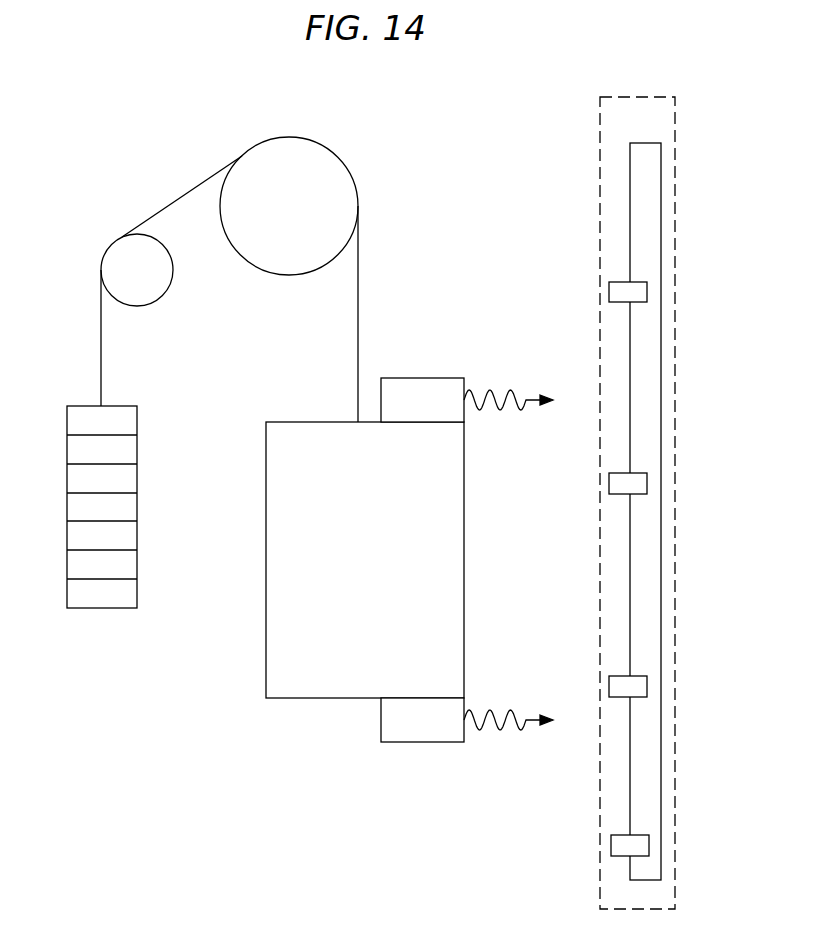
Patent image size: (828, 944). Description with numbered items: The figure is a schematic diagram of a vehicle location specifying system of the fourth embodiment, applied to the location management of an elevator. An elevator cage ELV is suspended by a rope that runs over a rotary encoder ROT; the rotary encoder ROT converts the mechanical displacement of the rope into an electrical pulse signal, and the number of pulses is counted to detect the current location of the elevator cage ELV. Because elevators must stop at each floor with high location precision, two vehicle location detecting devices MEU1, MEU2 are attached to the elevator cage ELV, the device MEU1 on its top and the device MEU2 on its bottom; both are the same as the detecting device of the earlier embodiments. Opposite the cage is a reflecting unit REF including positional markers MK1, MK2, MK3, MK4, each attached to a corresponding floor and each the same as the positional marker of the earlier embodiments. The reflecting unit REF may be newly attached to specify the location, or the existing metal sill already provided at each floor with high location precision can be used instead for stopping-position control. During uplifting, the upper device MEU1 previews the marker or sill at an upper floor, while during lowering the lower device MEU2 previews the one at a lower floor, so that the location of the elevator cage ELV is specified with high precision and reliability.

The rotary encoder ROT is at (212, 372).
The elevator cage ELV is at (365, 560).
The vehicle location detecting device MEU1 is at (467, 400).
The vehicle location detecting device MEU2 is at (467, 720).
The reflecting unit REF is at (637, 503).
The positional marker MK1 is at (611, 845).
The positional marker MK2 is at (609, 684).
The positional marker MK3 is at (609, 481).
The positional marker MK4 is at (609, 290).